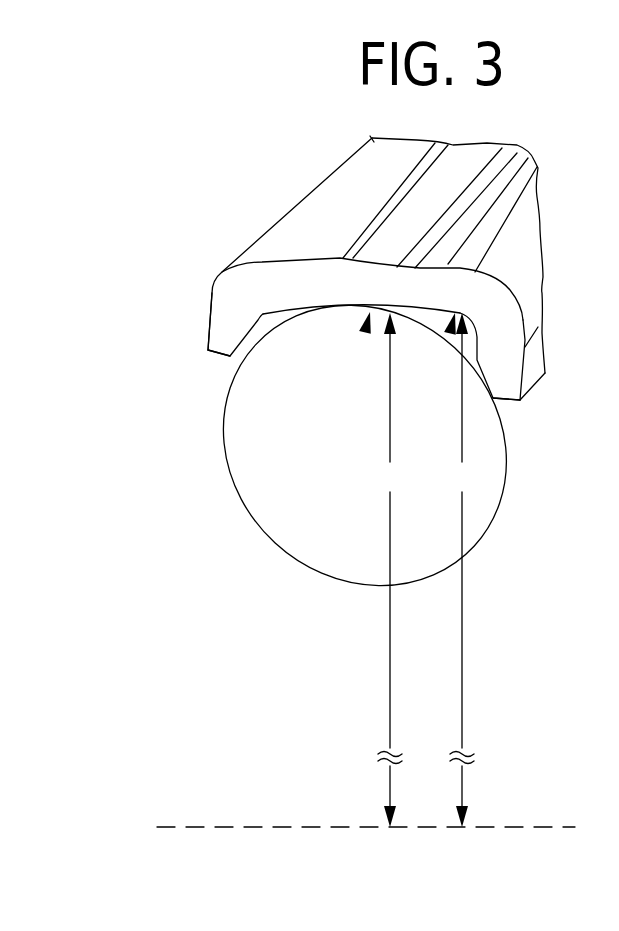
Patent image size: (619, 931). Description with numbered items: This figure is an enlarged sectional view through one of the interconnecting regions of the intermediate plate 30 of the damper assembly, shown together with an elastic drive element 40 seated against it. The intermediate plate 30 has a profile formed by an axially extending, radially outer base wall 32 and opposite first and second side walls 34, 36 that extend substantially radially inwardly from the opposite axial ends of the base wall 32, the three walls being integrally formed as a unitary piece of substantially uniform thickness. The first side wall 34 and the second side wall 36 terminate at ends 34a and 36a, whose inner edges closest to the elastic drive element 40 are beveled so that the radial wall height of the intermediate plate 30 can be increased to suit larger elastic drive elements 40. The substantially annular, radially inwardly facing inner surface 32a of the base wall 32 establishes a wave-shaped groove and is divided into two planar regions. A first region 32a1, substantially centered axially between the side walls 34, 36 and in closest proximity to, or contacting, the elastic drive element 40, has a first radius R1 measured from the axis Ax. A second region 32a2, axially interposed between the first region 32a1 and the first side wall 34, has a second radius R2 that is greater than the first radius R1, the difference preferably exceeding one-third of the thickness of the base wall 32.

The intermediate plate 30 is at (228, 207).
The radially outer base wall 32 is at (370, 280).
The radially inner surface 32a is at (290, 334).
The first region 32a1 is at (366, 326).
The second region 32a2 is at (451, 326).
The first side wall 34 is at (497, 358).
The end of first side wall 34a is at (510, 402).
The second side wall 36 is at (230, 331).
The end of second side wall 36a is at (220, 358).
The elastic drive element 40 is at (230, 485).
The first radius R1 is at (392, 570).
The second radius R2 is at (465, 570).
The axis Ax is at (545, 827).